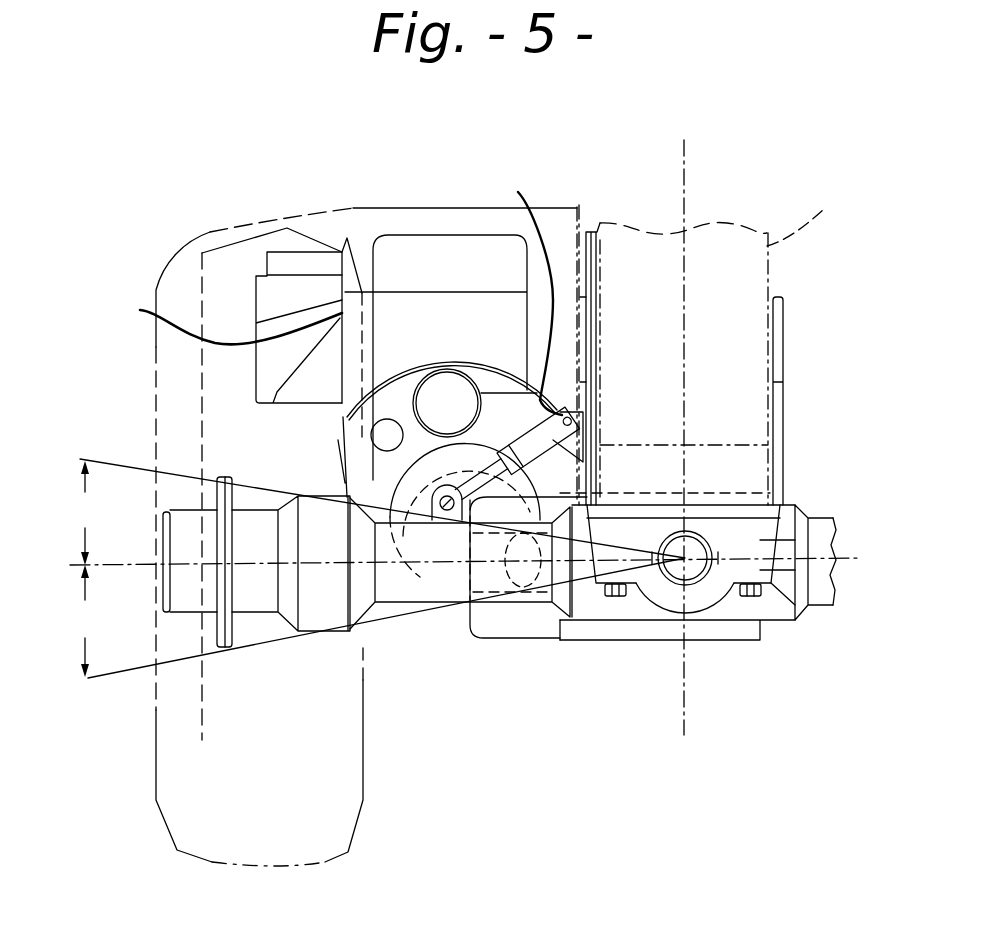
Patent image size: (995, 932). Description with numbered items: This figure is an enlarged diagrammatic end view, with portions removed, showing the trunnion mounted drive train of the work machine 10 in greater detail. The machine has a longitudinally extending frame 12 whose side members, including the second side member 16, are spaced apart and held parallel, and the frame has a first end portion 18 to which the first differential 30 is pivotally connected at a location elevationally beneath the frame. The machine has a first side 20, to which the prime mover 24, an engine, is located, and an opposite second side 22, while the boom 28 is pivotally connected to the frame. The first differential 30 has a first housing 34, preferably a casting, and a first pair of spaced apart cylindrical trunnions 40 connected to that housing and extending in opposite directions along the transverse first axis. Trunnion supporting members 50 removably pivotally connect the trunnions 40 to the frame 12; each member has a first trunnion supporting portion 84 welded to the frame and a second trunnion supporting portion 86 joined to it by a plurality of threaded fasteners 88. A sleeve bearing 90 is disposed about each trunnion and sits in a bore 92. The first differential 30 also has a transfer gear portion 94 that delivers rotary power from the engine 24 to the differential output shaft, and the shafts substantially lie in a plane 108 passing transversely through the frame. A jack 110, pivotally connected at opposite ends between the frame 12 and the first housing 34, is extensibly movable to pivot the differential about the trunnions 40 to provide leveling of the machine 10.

The work machine 10 is at (672, 103).
The jack 110 is at (518, 192).
The boom 28 is at (733, 220).
The prime mover 24 is at (340, 537).
The second side member 16 is at (785, 327).
The bore 92 is at (655, 545).
The sleeve bearing 90 is at (728, 517).
The first trunnion supporting portion 84 is at (767, 512).
The frame 12 is at (803, 466).
The second side 22 is at (822, 490).
The first end portion 18 is at (765, 540).
The trunnion supporting member 50 is at (757, 538).
The second trunnion supporting portion 86 is at (758, 573).
The first differential 30 is at (777, 610).
The threaded fasteners 88 is at (615, 598).
The first pair of cylindrical trunnions 40 is at (696, 585).
The first side 20 is at (422, 647).
The transfer gear portion 94 is at (517, 616).
The first housing 34 is at (593, 614).
The plane 108 is at (85, 565).